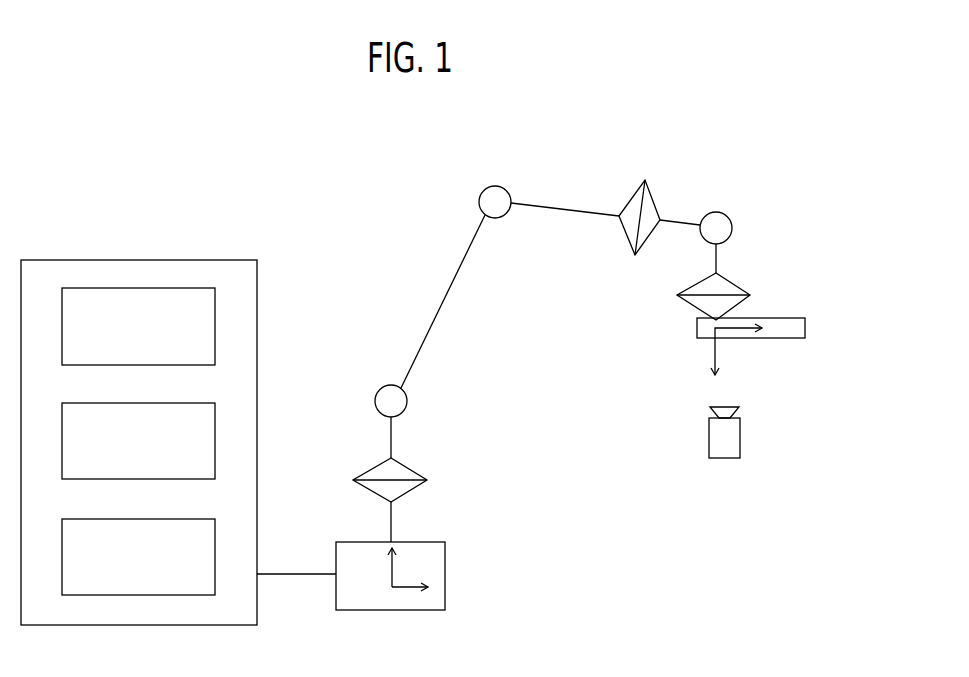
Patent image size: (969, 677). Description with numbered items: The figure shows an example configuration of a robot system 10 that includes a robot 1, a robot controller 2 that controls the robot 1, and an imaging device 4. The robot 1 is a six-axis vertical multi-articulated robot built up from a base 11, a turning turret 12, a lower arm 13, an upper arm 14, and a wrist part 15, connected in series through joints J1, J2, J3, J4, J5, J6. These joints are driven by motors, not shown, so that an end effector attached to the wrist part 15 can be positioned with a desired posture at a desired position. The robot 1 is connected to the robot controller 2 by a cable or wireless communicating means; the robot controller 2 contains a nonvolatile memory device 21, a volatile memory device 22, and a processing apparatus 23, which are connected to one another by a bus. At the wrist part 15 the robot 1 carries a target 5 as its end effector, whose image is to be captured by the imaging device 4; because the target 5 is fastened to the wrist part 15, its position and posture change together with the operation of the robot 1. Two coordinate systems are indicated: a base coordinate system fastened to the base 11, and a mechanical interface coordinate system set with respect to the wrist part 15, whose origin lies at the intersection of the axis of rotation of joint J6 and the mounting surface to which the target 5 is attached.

The robot system 10 is at (71, 116).
The robot 1 is at (440, 195).
The robot controller 2 is at (210, 260).
The nonvolatile memory device 21 is at (215, 312).
The volatile memory device 22 is at (215, 432).
The processing apparatus 23 is at (215, 540).
The base 11 is at (445, 560).
The turning turret 12 is at (402, 518).
The lower arm 13 is at (447, 279).
The upper arm 14 is at (561, 201).
The wrist part 15 is at (706, 253).
The joint J1 is at (375, 465).
The joint J2 is at (388, 385).
The joint J3 is at (485, 185).
The joint J4 is at (640, 185).
The joint J5 is at (718, 212).
The joint J6 is at (735, 283).
The target 5 is at (790, 318).
The imaging device 4 is at (732, 458).